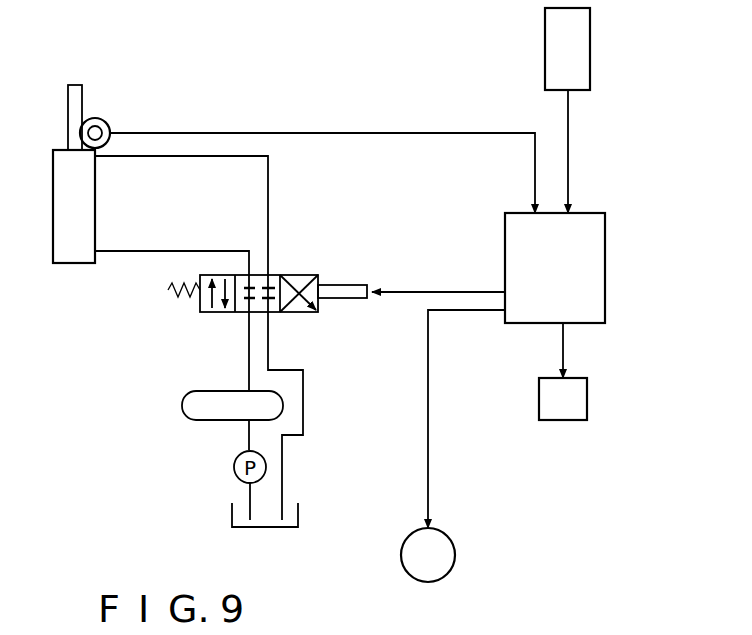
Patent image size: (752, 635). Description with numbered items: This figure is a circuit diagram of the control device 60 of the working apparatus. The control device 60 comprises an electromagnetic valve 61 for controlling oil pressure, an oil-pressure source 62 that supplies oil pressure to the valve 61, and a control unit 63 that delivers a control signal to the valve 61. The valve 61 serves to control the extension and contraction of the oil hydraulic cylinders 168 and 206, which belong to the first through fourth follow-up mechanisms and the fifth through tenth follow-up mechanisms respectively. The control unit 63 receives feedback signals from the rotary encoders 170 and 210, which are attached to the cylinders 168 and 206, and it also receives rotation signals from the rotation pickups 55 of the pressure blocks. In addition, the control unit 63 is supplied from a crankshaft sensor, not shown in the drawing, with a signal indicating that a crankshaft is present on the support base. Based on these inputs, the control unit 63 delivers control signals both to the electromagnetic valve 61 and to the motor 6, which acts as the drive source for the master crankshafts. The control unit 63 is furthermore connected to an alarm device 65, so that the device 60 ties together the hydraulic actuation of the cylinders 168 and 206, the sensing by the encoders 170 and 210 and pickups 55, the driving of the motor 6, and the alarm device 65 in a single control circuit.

The rotary encoder 170 is at (156, 120).
The rotary encoder 210 is at (107, 122).
The oil hydraulic cylinder 168 is at (138, 206).
The oil hydraulic cylinder 206 is at (88, 203).
The electromagnetic valve 61 is at (322, 261).
The oil-pressure source 62 is at (212, 429).
The rotation pickup 55 is at (582, 68).
The control unit 63 is at (592, 283).
The alarm device 65 is at (568, 421).
The control device 60 is at (611, 343).
The motor 6 is at (456, 555).